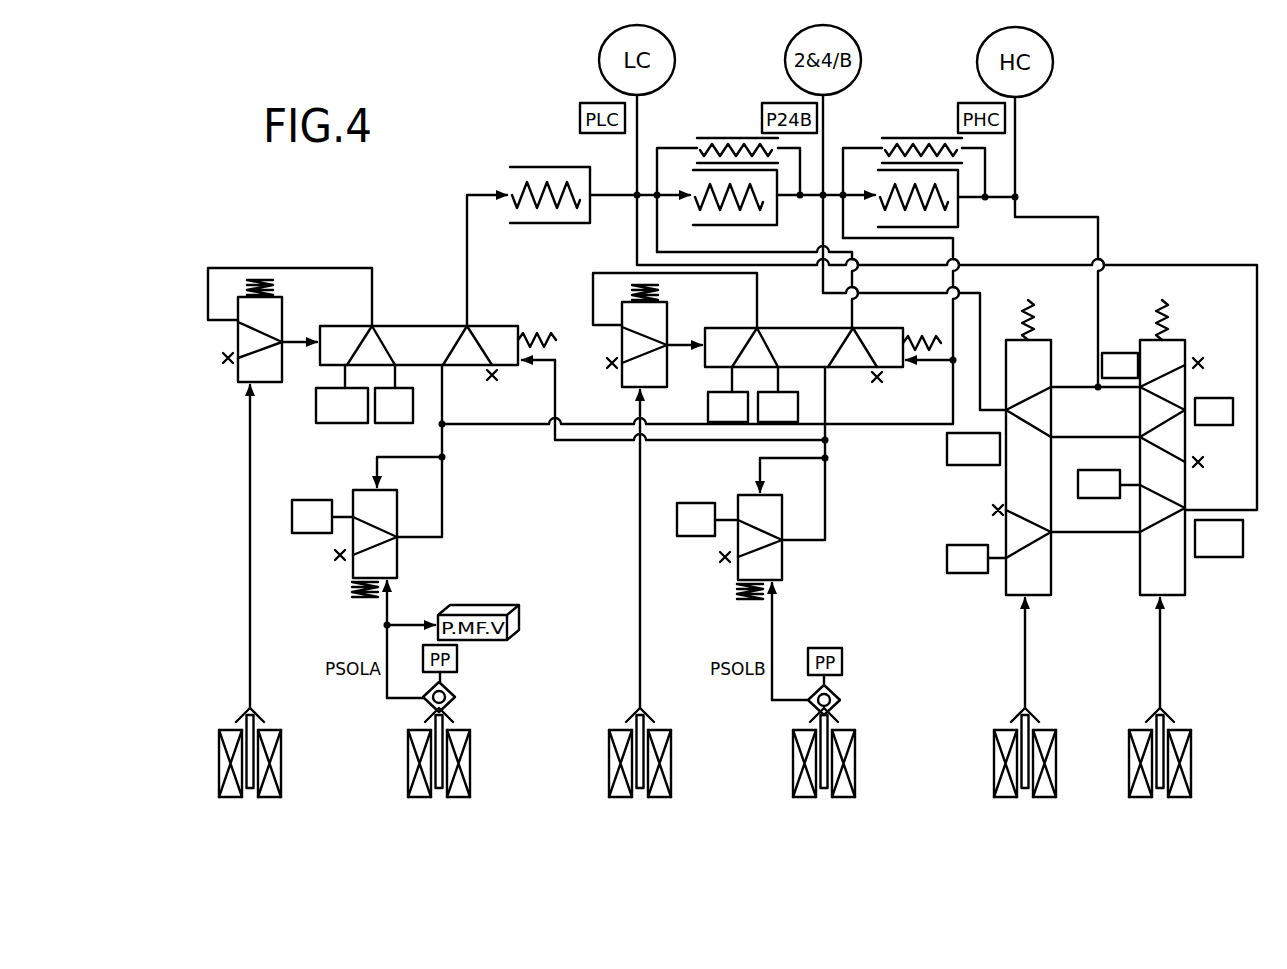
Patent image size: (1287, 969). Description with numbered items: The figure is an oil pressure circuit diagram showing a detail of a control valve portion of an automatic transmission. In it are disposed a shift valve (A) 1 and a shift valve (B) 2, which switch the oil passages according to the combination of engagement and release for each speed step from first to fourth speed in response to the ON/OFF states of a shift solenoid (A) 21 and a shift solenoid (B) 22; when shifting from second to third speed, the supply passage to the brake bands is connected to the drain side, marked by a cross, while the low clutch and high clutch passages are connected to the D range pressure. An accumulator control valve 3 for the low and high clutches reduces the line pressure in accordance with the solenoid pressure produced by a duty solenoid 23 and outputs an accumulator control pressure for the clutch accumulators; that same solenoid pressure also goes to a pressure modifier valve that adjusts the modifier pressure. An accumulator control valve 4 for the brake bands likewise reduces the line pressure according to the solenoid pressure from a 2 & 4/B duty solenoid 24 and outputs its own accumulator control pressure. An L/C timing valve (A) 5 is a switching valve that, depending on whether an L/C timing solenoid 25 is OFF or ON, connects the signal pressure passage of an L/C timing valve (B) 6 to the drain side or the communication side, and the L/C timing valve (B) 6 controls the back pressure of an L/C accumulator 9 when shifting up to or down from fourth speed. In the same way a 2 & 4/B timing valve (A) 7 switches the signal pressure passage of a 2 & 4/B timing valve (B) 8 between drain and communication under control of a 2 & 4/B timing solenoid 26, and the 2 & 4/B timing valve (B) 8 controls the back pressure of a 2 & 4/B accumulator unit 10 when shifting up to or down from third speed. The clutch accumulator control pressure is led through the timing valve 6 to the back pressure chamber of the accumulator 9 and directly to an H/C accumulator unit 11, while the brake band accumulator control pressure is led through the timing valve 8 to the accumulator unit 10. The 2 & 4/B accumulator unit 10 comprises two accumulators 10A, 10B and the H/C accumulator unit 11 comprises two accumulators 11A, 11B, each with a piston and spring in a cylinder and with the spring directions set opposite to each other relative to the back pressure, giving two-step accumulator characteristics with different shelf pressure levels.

The shift valve (A) 1 is at (1051, 565).
The shift valve (B) 2 is at (1185, 585).
The accumulator control valve for L/C & H/C 3 is at (397, 560).
The accumulator control valve for 2 & 4/B 4 is at (782, 563).
The L/C timing valve (A) 5 is at (282, 305).
The L/C timing valve (B) 6 is at (415, 326).
The 2 & 4/B timing valve (A) 7 is at (667, 312).
The 2 & 4/B timing valve (B) 8 is at (775, 328).
The L/C accumulator 9 is at (523, 167).
The 2 & 4/B accumulator unit 10 is at (731, 153).
The accumulator 10A is at (735, 225).
The accumulator 10B is at (709, 138).
The H/C accumulator unit 11 is at (942, 153).
The accumulator 11A is at (958, 222).
The accumulator 11B is at (900, 138).
The shift solenoid (A) 21 is at (1058, 765).
The shift solenoid (B) 22 is at (1193, 765).
The duty solenoid 23 is at (472, 766).
The 2 & 4/B duty solenoid 24 is at (857, 766).
The L/C timing solenoid 25 is at (283, 766).
The 2 & 4/B timing solenoid 26 is at (673, 766).